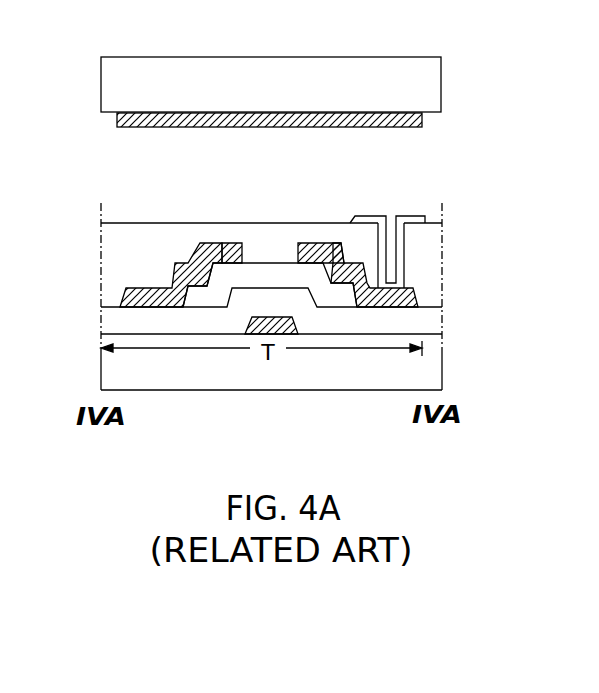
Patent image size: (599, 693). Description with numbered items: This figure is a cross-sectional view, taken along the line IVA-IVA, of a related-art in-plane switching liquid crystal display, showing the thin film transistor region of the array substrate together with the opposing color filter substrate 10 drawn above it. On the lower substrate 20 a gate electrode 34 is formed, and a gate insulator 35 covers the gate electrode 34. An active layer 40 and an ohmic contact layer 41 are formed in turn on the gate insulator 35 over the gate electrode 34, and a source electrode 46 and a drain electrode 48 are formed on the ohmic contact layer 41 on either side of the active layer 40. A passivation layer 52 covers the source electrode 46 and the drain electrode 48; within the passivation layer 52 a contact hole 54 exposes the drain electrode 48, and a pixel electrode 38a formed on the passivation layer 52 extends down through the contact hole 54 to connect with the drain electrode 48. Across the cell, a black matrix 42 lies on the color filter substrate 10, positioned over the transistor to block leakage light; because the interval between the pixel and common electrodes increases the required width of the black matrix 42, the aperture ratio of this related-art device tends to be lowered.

The upper substrate (color filter substrate) 10 is at (279, 96).
The black matrix 42 is at (185, 113).
The substrate 20 is at (366, 383).
The gate insulator 35 is at (430, 328).
The gate electrode 34 is at (257, 335).
The active layer 40 is at (272, 270).
The source electrode 46 is at (187, 260).
The ohmic contact layer 41 is at (228, 245).
The drain electrode 48 is at (310, 244).
The passivation layer 52 is at (120, 240).
The contact hole 54 is at (391, 211).
The pixel electrode 38a is at (419, 216).